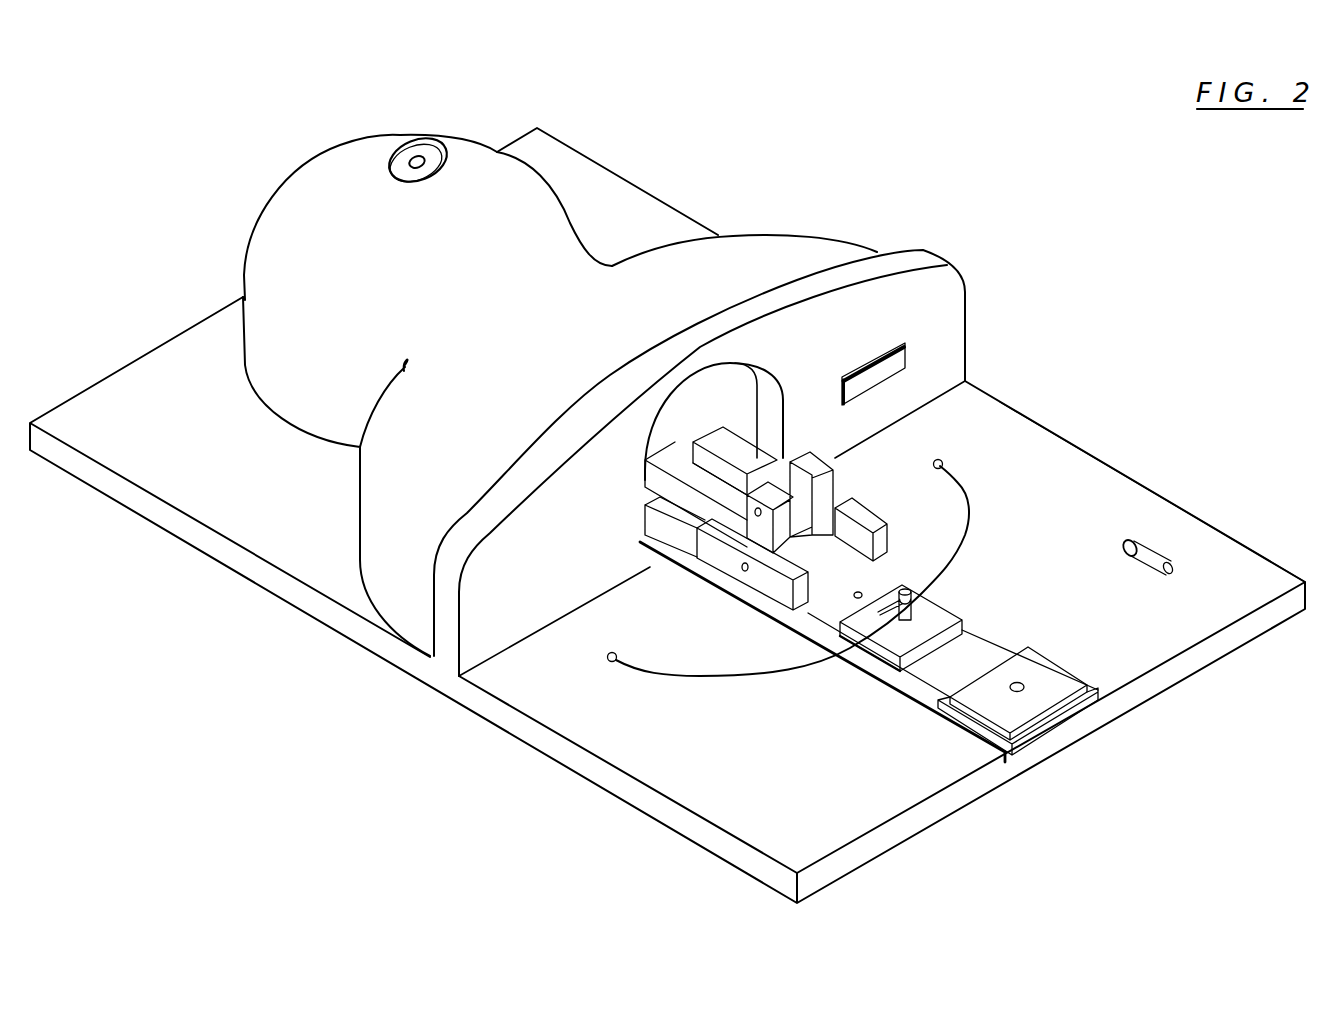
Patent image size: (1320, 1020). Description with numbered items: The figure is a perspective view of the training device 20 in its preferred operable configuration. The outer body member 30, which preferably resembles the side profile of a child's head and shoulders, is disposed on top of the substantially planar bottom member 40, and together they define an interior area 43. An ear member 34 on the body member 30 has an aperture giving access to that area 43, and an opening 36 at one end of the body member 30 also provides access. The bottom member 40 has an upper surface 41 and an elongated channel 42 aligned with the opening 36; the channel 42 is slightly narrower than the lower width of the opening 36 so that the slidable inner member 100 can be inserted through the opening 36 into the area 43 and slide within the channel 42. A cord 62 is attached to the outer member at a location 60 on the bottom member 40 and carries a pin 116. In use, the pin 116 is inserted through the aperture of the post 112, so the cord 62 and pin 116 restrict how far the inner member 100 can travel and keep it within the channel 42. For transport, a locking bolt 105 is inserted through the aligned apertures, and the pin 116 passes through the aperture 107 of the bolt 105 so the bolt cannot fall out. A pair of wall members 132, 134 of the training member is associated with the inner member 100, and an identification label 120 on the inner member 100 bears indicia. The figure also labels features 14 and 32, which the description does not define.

The rail 14 is at (800, 625).
The training device 20 is at (934, 200).
The outer body member 30 is at (737, 247).
The dome housing 32 is at (437, 167).
The ear member 34 is at (420, 152).
The opening 36 is at (768, 393).
The bottom member 40 is at (1220, 645).
The upper surface 41 is at (1230, 555).
The elongated channel 42 is at (1005, 765).
The area 43 is at (742, 403).
The location 60 is at (608, 662).
The cord 62 is at (700, 677).
The inner member 100 is at (990, 610).
The locking bolt 105 is at (1140, 555).
The aperture 107 is at (1158, 565).
The post 112 is at (908, 640).
The pin 116 is at (893, 588).
The identification label 120 is at (855, 623).
The wall member 132 is at (712, 557).
The wall member 134 is at (853, 520).